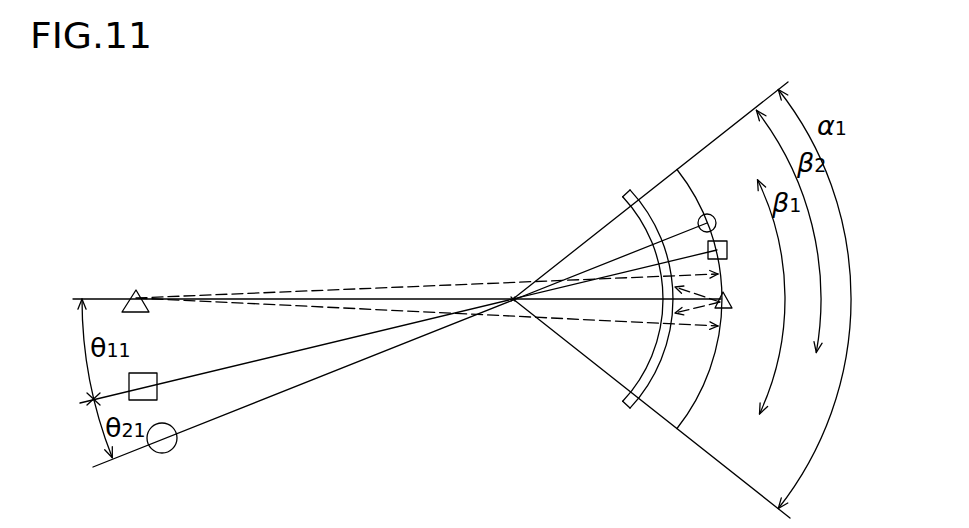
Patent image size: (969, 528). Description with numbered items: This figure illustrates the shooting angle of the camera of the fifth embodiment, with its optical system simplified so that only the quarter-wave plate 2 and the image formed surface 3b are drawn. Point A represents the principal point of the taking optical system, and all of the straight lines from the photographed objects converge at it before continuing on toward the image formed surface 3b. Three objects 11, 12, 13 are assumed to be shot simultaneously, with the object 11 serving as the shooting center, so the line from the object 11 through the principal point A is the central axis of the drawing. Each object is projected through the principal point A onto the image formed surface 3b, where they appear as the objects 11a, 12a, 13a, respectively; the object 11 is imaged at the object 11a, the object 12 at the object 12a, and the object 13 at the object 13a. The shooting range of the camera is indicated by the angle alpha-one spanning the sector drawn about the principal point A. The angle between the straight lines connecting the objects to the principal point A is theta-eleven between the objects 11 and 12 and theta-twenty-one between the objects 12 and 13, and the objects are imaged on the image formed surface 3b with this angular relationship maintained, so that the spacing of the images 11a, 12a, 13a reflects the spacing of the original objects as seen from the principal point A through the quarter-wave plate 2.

The quarter-wave plate 2 is at (630, 190).
The image formed surface 3b is at (694, 405).
The object 11 is at (145, 292).
The object 12 is at (147, 382).
The object 13 is at (165, 432).
The projected object 11a is at (748, 293).
The projected object 12a is at (727, 250).
The projected object 13a is at (712, 217).
The principal point A is at (513, 299).